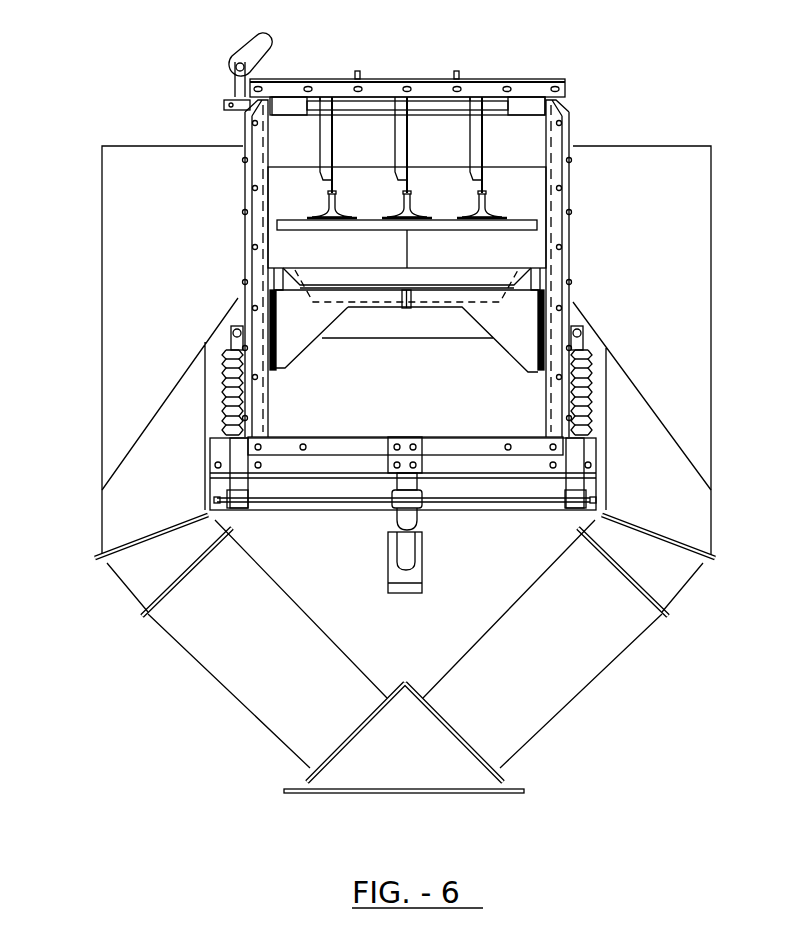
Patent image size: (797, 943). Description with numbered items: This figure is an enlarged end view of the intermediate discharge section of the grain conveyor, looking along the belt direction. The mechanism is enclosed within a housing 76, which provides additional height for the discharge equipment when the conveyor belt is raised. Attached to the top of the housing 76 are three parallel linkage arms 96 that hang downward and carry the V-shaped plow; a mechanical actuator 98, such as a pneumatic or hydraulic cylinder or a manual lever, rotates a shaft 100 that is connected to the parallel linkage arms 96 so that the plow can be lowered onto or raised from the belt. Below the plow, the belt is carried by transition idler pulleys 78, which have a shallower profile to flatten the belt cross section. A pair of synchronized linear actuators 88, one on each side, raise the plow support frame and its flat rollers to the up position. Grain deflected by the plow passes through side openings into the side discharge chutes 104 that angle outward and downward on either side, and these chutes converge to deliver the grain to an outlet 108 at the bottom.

The housing 76 is at (532, 92).
The transition idler pulleys 78 is at (300, 322).
The synchronized linear actuators 88 is at (585, 397).
The parallel linkage arms 96 is at (400, 133).
The mechanical actuator 98 is at (272, 48).
The shaft 100 is at (457, 105).
The side discharge chutes 104 is at (668, 310).
The outlet 108 is at (465, 797).